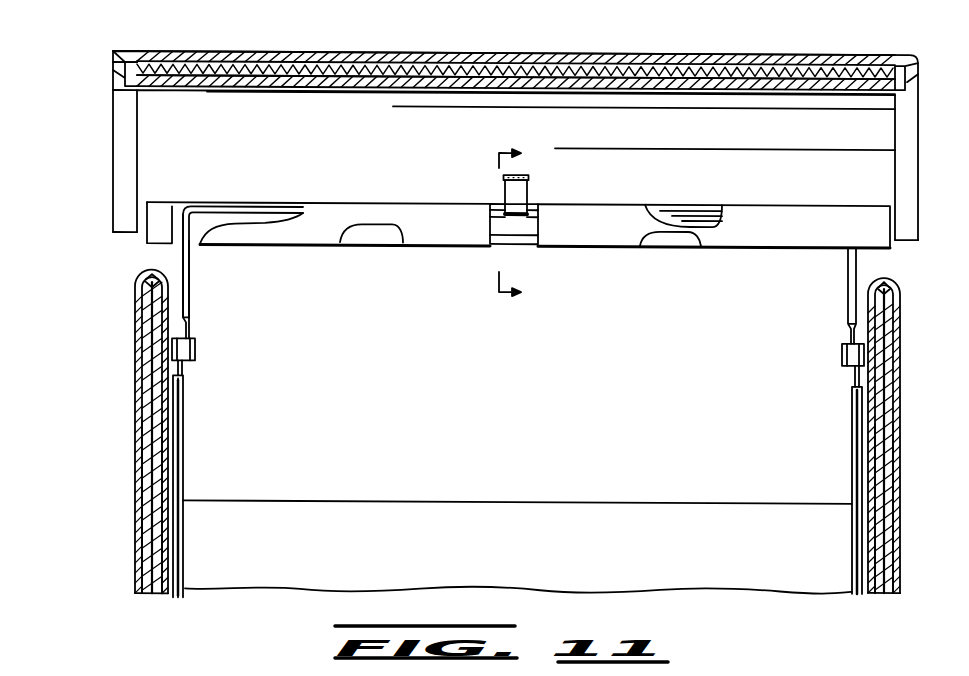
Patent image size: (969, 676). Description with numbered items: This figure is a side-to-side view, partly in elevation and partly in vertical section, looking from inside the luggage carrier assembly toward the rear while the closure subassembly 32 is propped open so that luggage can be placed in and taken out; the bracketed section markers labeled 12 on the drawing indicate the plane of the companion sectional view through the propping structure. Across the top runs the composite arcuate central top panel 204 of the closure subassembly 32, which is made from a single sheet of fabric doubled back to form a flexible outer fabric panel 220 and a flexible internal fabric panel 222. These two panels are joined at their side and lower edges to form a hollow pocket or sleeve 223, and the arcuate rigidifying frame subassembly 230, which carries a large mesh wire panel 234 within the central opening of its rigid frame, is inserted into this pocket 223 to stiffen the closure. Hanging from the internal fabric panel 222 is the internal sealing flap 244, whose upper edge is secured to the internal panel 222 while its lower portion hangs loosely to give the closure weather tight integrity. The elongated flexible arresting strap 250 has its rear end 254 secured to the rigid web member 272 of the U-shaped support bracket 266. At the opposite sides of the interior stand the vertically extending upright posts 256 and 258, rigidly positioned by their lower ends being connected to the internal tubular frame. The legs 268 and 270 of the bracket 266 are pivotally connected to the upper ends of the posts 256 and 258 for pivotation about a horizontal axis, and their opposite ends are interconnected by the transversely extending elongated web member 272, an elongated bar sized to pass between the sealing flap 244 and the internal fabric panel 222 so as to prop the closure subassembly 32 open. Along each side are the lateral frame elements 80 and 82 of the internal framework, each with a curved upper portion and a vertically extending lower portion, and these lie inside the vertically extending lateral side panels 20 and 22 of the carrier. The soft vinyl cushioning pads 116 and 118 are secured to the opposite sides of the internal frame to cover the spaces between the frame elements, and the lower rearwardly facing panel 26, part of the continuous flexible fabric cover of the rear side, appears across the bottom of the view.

The composite arcuate central top panel 204 is at (551, 52).
The flexible outer fabric sheet 220 is at (440, 52).
The arcuate rigidifying frame subassembly 230 is at (354, 58).
The hollow pocket or sleeve 223 is at (150, 55).
The large mesh wire panel 234 is at (773, 60).
The closure subassembly 32 is at (678, 52).
The flexible internal fabric panel 222 is at (365, 150).
The internal sealing flap 244 is at (300, 243).
The elongated flexible arresting strap 250 is at (508, 188).
The rear end of the arresting strap 254 is at (520, 225).
The section line 12- 12 is at (523, 225).
The transversely extending elongated web member 272 is at (238, 208).
The leg of the U-shaped support bracket 270 is at (193, 291).
The U-shaped support bracket 266 is at (168, 262).
The vertically extending upright post 258 is at (183, 427).
The lateral side panel 22 is at (136, 465).
The lateral frame element 82 is at (146, 300).
The vinyl cushioning panel 116 is at (148, 515).
The leg of the U-shaped support bracket 268 is at (848, 270).
The vertically extending upright post 256 is at (853, 444).
The lateral side panel 20 is at (894, 470).
The lateral frame element 80 is at (893, 279).
The vinyl cushioning panel 118 is at (888, 527).
The lower rearwardly facing panel 26 is at (525, 566).